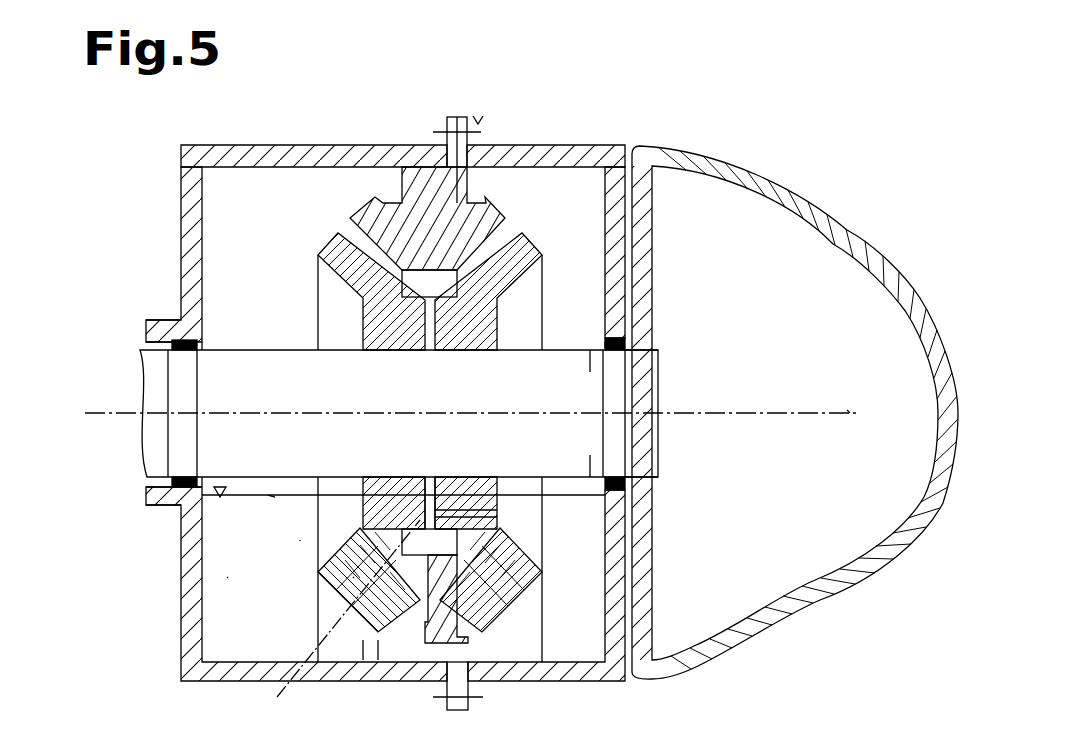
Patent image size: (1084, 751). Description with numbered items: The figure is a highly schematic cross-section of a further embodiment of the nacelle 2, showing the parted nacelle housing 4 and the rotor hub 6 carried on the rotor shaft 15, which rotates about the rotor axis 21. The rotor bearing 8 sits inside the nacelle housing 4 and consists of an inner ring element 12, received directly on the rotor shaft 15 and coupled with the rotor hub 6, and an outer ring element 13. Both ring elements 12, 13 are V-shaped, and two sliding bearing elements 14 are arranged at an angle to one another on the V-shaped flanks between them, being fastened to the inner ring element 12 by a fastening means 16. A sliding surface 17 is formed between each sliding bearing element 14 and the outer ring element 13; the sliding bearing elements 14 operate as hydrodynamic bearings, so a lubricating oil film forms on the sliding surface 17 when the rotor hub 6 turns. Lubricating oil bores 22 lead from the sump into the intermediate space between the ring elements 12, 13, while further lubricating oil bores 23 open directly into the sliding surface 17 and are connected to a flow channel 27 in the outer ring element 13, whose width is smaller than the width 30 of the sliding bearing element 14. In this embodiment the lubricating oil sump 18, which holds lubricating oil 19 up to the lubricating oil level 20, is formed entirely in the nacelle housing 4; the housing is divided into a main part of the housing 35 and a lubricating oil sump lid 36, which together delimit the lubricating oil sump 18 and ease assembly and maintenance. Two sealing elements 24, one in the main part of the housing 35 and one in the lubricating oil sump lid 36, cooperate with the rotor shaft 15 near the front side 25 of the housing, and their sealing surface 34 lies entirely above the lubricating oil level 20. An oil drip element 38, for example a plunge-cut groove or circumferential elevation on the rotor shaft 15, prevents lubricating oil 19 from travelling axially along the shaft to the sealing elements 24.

The nacelle 2 is at (795, 368).
The nacelle housing 4 is at (190, 645).
The rotor hub 6 is at (807, 608).
The rotor bearing 8 is at (305, 540).
The inner ring element 12 is at (395, 515).
The outer ring element 13 is at (360, 632).
The sliding bearing element 14 is at (345, 500).
The rotor shaft 15 is at (155, 403).
The fastening means 16 is at (341, 626).
The sliding surface 17 is at (185, 357).
The lubricating oil sump 18 is at (288, 468).
The lubricating oil 19 is at (227, 577).
The lubricating oil level 20 is at (275, 497).
The rotor axis 21 is at (847, 410).
The lubricating oil bores 22 is at (470, 515).
The lubricating oil bores 23 is at (425, 630).
The sealing element 24 is at (175, 322).
The front side 25 is at (465, 170).
The flow channel 27 is at (380, 560).
The width 30 is at (353, 577).
The sealing surface 34 is at (608, 472).
The main part of the housing 35 is at (262, 150).
The lubricating oil sump lid 36 is at (565, 150).
The oil drip element 38 is at (610, 347).